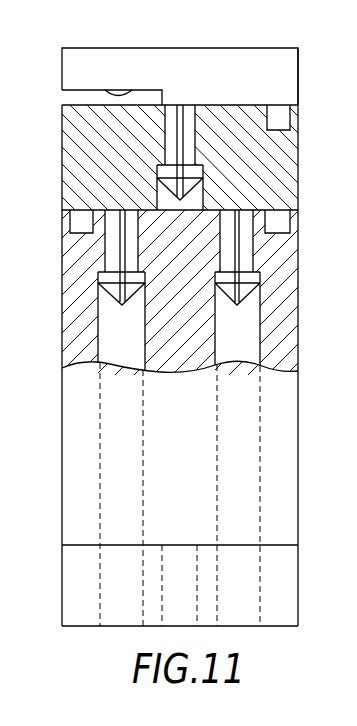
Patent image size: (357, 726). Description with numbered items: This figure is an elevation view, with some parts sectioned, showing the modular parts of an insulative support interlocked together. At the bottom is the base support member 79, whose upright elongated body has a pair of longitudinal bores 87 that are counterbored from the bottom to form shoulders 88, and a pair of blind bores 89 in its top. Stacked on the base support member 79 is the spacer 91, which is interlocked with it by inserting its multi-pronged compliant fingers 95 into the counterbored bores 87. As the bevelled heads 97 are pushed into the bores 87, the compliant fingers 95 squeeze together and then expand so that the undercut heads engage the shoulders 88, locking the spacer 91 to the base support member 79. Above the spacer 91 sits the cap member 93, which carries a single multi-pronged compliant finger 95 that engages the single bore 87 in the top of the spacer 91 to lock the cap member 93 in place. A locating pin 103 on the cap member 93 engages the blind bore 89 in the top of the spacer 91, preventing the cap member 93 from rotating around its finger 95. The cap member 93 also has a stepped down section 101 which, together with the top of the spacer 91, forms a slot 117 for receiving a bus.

The base support member 79 is at (298, 455).
The longitudinal bores 87 is at (154, 202).
The shoulders 88 is at (257, 262).
The blind bores 89 is at (282, 107).
The spacer 91 is at (300, 144).
The cap member 93 is at (298, 50).
The multi-pronged compliant fingers 95 is at (189, 108).
The bevelled heads 97 is at (262, 298).
The stepped down section 101 is at (128, 89).
The locating pin 103 is at (273, 108).
The slot 117 is at (67, 96).